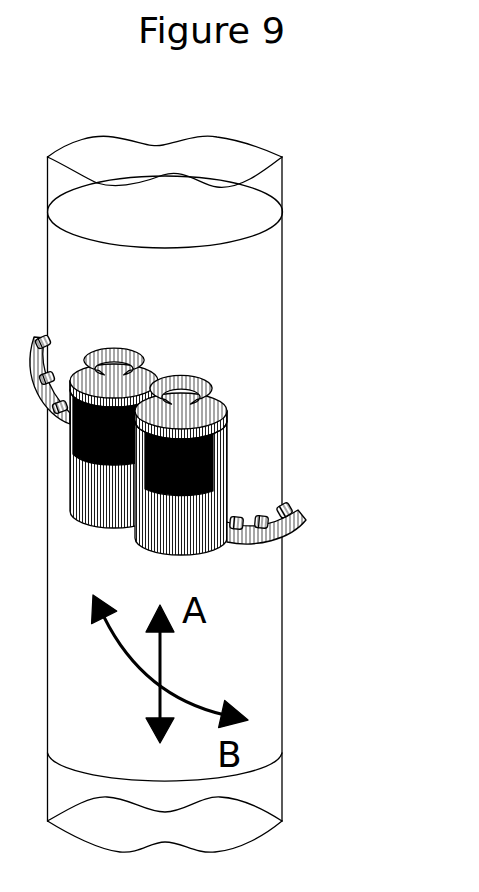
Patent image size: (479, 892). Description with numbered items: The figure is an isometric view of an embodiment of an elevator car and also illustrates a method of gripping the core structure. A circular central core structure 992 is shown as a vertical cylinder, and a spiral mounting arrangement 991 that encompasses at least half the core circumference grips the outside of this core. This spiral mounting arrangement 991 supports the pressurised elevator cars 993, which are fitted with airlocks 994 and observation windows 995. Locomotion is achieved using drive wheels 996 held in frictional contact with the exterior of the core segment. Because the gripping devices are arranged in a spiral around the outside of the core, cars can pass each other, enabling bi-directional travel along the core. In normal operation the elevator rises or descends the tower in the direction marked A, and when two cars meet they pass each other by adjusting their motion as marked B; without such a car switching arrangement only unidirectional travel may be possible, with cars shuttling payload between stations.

The spiral mounting arrangement 991 is at (73, 344).
The circular central core structure 992 is at (215, 353).
The pressurised elevator cars 993 is at (250, 451).
The airlocks 994 is at (236, 413).
The observation windows 995 is at (213, 476).
The drive wheels 996 is at (314, 512).